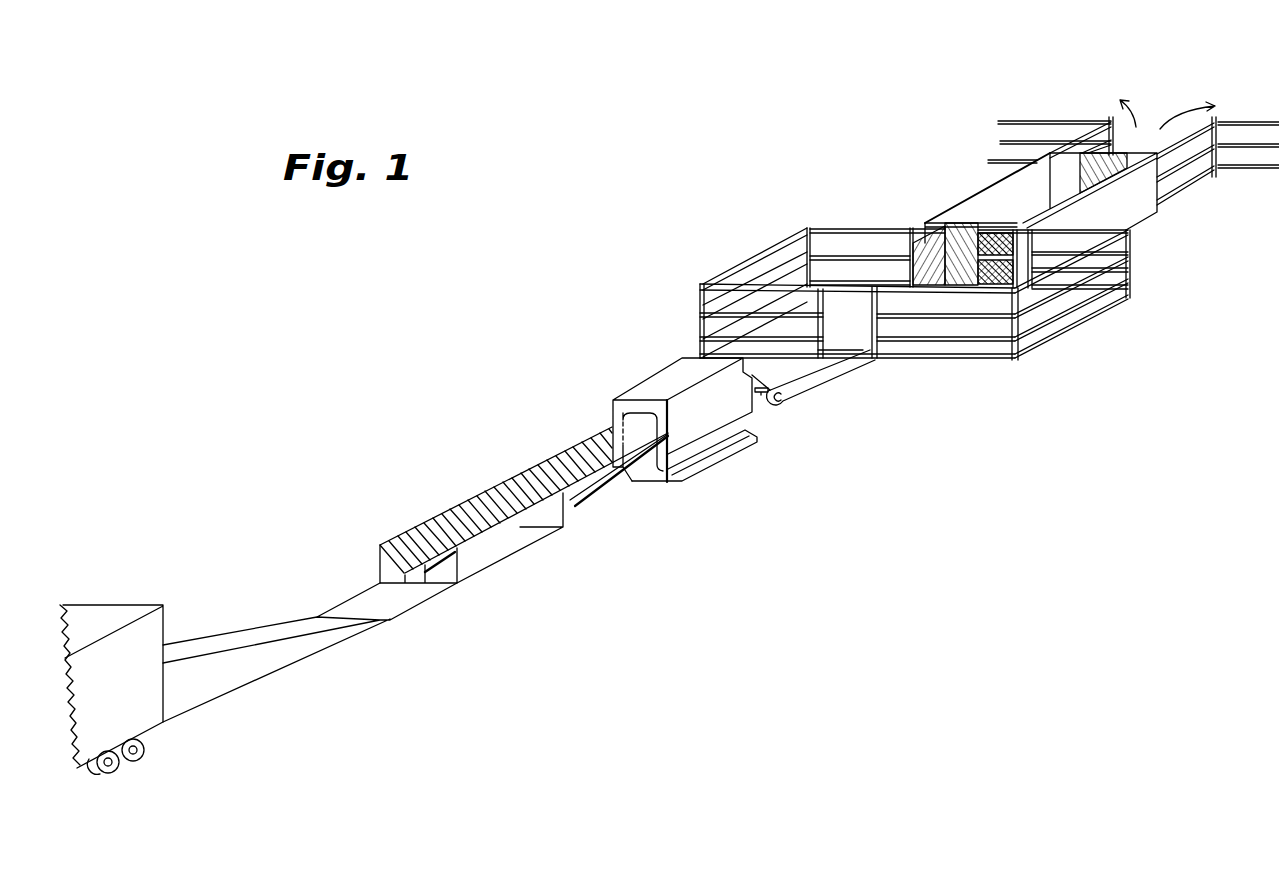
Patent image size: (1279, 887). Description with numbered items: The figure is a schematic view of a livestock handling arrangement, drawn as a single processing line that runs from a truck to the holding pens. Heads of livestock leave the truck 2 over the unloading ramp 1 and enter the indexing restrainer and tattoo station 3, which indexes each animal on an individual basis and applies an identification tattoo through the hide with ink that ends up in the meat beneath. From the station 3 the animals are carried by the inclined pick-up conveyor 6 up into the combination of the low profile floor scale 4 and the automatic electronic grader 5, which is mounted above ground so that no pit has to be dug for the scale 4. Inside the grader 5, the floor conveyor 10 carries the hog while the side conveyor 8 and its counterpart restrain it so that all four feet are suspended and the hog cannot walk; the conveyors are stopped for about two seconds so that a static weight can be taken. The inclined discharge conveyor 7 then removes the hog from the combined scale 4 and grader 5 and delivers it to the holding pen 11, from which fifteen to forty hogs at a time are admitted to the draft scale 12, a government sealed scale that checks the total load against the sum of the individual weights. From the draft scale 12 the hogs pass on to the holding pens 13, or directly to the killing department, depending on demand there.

The unloading ramp 1 is at (320, 652).
The truck 2 is at (153, 727).
The indexing restrainer and tattoo station 3 is at (482, 573).
The low profile floor scale 4 is at (697, 477).
The automatic electronic grader 5 is at (758, 425).
The inclined pick-up conveyor 6 is at (588, 498).
The inclined discharge conveyor 7 is at (837, 373).
The side conveyor 8 is at (759, 398).
The floor conveyor 10 is at (781, 401).
The holding pen 11 is at (1073, 327).
The draft scale 12 is at (987, 187).
The holding pens 13 is at (1133, 118).